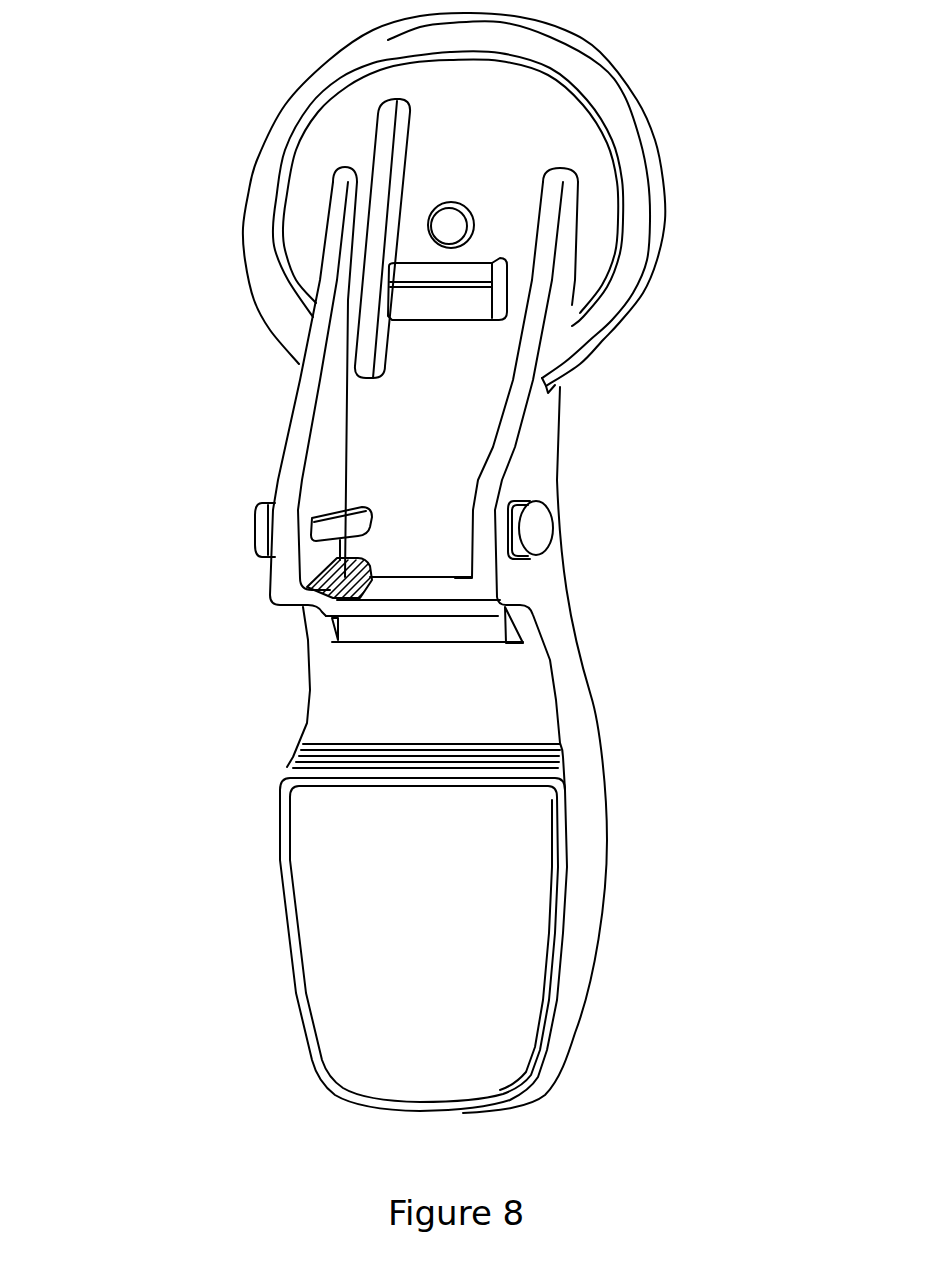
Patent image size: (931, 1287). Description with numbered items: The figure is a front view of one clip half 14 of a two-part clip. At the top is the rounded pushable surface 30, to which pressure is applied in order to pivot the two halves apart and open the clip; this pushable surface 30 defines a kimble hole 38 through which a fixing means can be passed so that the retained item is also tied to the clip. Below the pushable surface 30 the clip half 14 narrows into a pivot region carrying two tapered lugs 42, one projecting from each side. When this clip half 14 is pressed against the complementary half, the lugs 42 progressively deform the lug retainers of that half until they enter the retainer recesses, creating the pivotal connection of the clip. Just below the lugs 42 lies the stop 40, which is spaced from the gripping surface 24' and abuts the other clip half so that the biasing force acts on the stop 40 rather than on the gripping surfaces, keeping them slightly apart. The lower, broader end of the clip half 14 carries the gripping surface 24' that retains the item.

The clip half 14 is at (307, 683).
The gripping surface 24' is at (514, 944).
The pushable surface 30 is at (662, 136).
The kimble hole 38 is at (476, 227).
The stop 40 is at (440, 607).
The lugs 42 is at (258, 527).